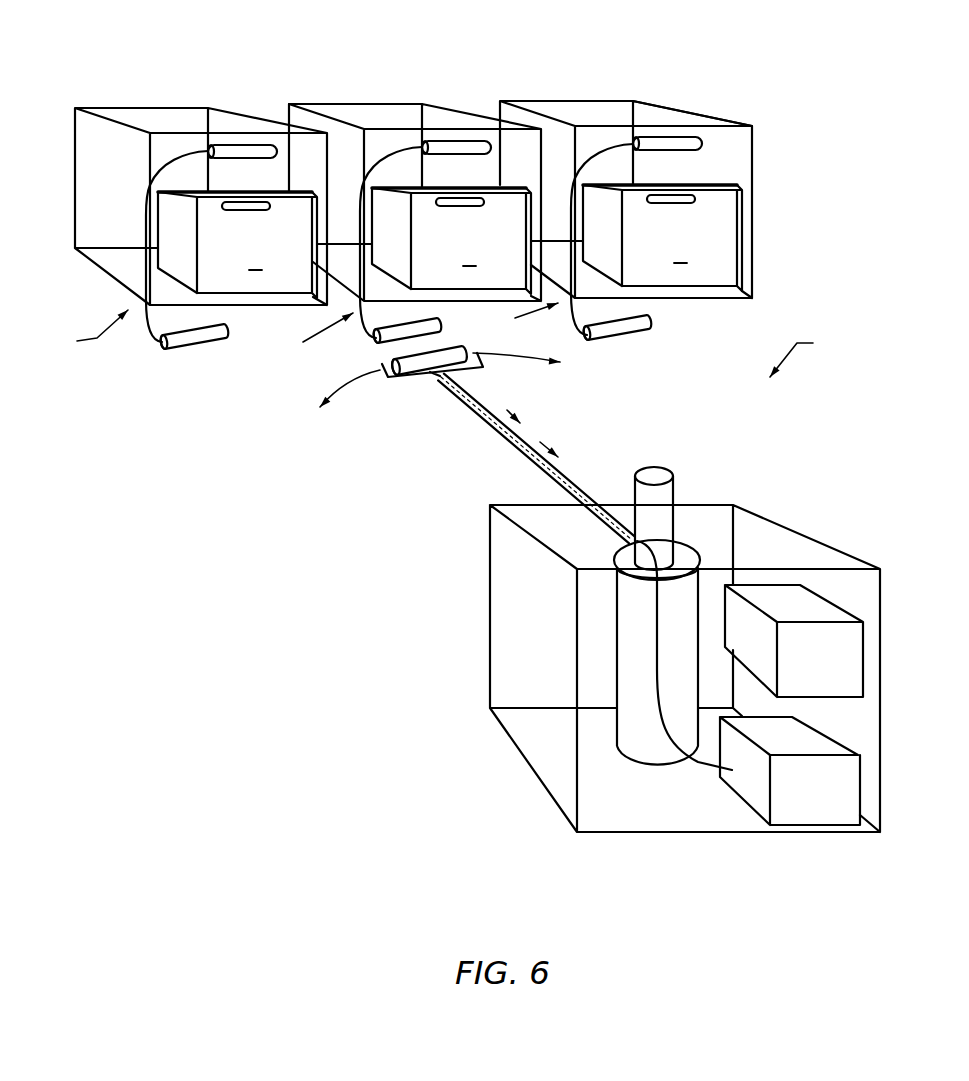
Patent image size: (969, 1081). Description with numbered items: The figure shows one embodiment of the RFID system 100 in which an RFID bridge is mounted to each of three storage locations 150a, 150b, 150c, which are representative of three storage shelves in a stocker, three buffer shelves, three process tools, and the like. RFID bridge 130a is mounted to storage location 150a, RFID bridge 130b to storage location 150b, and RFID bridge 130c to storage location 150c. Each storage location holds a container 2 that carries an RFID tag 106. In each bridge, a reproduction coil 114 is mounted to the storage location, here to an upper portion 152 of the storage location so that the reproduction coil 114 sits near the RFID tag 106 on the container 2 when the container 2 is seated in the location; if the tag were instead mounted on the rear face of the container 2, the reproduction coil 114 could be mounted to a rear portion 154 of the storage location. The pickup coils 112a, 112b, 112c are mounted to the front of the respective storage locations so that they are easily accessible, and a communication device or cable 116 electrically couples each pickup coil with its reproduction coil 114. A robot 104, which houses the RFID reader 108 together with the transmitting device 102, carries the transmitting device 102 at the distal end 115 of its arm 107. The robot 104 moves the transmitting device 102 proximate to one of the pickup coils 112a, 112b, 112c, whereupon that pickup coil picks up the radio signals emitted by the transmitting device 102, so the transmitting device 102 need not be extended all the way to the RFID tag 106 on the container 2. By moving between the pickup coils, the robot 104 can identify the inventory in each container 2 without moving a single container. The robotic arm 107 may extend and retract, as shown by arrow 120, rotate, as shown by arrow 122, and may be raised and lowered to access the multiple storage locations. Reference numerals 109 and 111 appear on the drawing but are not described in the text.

The container 2 is at (450, 241).
The RFID system 100 is at (810, 356).
The transmitting device 102 is at (413, 380).
The robotic arm mechanism 104 is at (485, 777).
The RFID tag 106 is at (240, 209).
The robotic arm 107 is at (500, 430).
The RFID reader 108 is at (810, 815).
The reservoir 109 is at (630, 650).
The controller 111 is at (805, 637).
The pickup coil 112a is at (190, 343).
The pickup coil 112b is at (440, 328).
The pickup coil 112c is at (628, 328).
The reproduction coil 114 is at (232, 148).
The distal end 115 is at (453, 395).
The cable 116 is at (168, 157).
The arrow 120 is at (537, 418).
The arrow 122 is at (352, 368).
The RFID bridge 130a is at (78, 333).
The RFID bridge 130b is at (303, 335).
The RFID bridge 130c is at (514, 317).
The storage location 150a is at (145, 80).
The storage location 150b is at (357, 65).
The storage location 150c is at (578, 68).
The upper portion 152 is at (725, 120).
The rear portion 154 is at (377, 103).